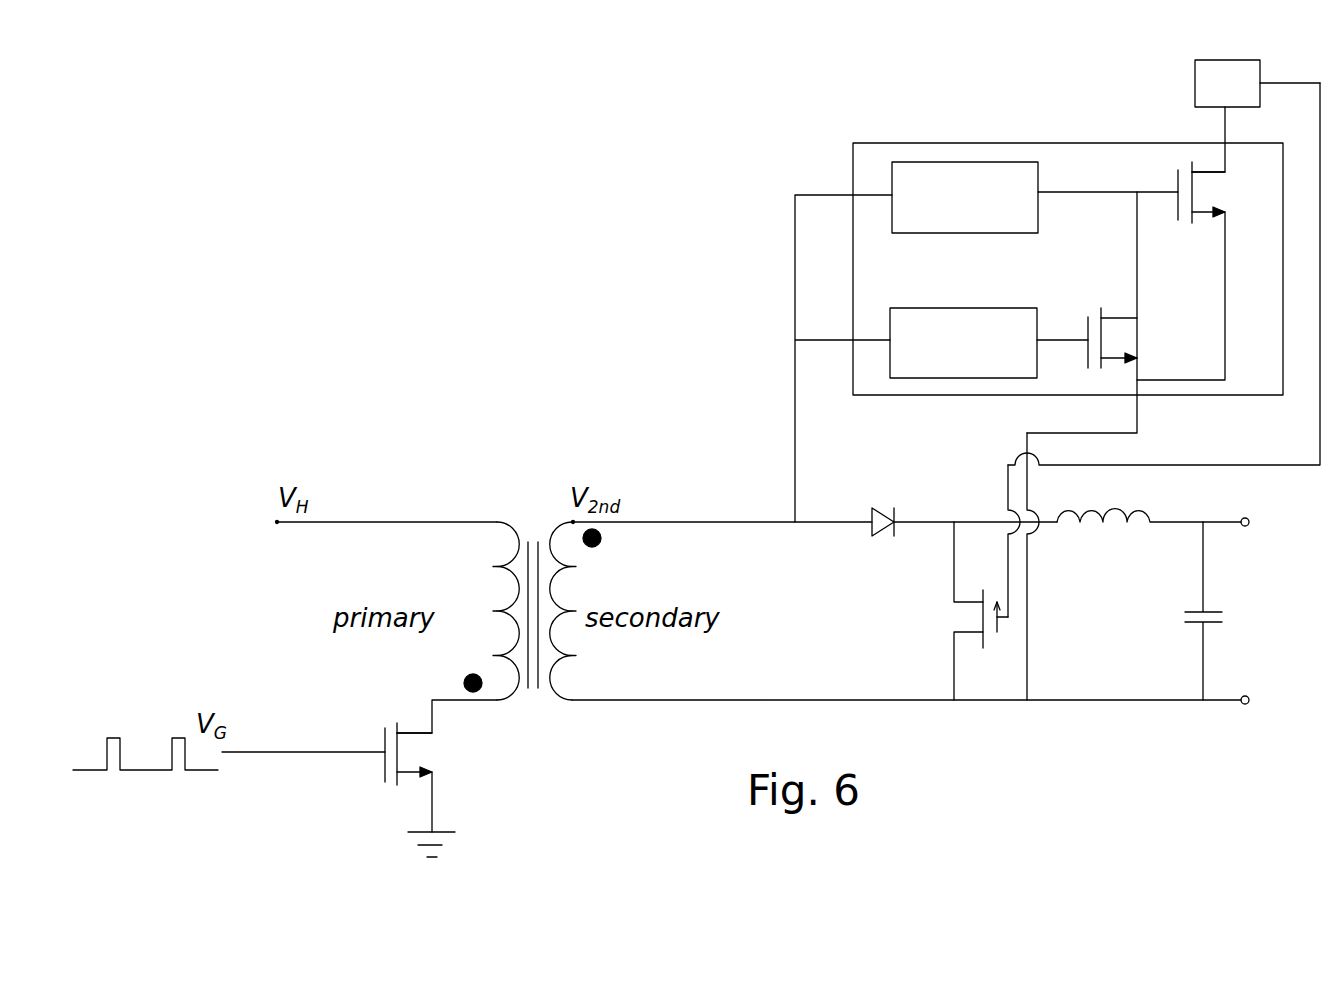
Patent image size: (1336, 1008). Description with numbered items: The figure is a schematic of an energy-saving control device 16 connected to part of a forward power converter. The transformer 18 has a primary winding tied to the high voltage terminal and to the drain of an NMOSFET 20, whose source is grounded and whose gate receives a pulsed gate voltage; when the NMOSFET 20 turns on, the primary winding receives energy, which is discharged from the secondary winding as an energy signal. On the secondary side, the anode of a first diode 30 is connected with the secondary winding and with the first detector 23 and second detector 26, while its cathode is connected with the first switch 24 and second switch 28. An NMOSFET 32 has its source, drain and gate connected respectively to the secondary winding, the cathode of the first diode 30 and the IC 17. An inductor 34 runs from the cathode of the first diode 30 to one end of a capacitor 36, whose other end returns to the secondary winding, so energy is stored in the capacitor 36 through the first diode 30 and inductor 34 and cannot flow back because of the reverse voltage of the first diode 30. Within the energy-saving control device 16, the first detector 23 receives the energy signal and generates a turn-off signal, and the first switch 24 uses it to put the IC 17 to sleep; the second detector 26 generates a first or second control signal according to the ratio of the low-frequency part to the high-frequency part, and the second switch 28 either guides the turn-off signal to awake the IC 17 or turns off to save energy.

The energy-saving control device 16 is at (853, 273).
The integrated circuit 17 is at (1195, 80).
The transformer 18 is at (497, 522).
The NMOSFET 20 is at (347, 723).
The first detector 23 is at (935, 162).
The first switch 24 is at (1195, 188).
The second detector 26 is at (890, 327).
The second switch 28 is at (1105, 335).
The first diode 30 is at (870, 535).
The NMOSFET 32 is at (954, 602).
The inductor 34 is at (1060, 527).
The capacitor 36 is at (1215, 625).